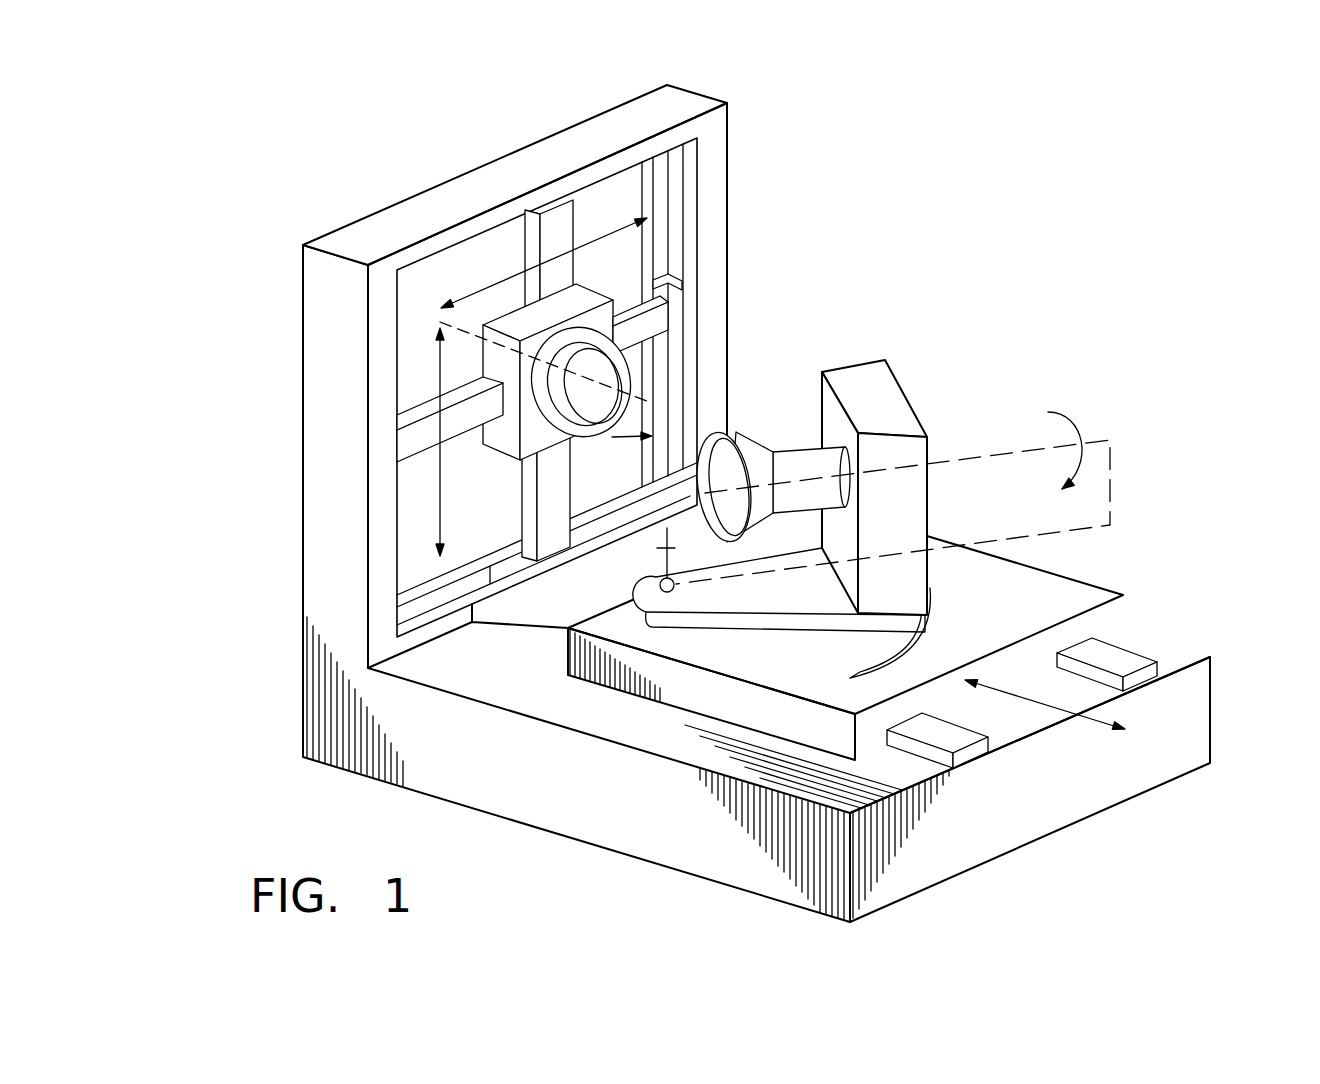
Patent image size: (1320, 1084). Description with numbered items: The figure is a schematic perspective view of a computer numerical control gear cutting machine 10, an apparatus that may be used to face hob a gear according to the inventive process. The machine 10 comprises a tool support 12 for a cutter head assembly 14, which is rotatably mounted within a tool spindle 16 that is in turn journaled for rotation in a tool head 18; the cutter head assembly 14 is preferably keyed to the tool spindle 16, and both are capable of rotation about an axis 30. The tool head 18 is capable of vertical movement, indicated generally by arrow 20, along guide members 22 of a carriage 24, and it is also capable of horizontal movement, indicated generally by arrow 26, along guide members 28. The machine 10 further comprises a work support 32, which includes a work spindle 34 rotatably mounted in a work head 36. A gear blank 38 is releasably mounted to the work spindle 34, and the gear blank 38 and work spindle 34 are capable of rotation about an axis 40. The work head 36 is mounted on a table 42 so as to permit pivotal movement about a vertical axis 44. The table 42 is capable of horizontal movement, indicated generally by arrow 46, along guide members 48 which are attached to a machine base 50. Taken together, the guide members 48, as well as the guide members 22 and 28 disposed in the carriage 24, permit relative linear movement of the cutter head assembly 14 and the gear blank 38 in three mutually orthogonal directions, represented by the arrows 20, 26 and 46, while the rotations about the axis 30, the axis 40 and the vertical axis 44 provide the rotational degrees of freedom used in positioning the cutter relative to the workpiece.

The computer numerical control gear cutting machine 10 is at (572, 97).
The tool support 12 is at (533, 418).
The cutter head assembly 14 is at (587, 434).
The tool spindle 16 is at (543, 406).
The tool head 18 is at (496, 448).
The arrow 20 is at (441, 497).
The guide members 22 is at (690, 229).
The carriage 24 is at (317, 450).
The arrow 26 is at (603, 240).
The guide members 28 is at (447, 254).
The axis 30 is at (440, 320).
The work support 32 is at (918, 463).
The work spindle 34 is at (810, 450).
The work head 36 is at (870, 372).
The gear blank 38 is at (732, 433).
The axis 40 is at (968, 463).
The table 42 is at (1063, 588).
The vertical axis 44 is at (643, 550).
The arrow 46 is at (1040, 703).
The guide members 48 is at (1130, 657).
The machine base 50 is at (1197, 717).